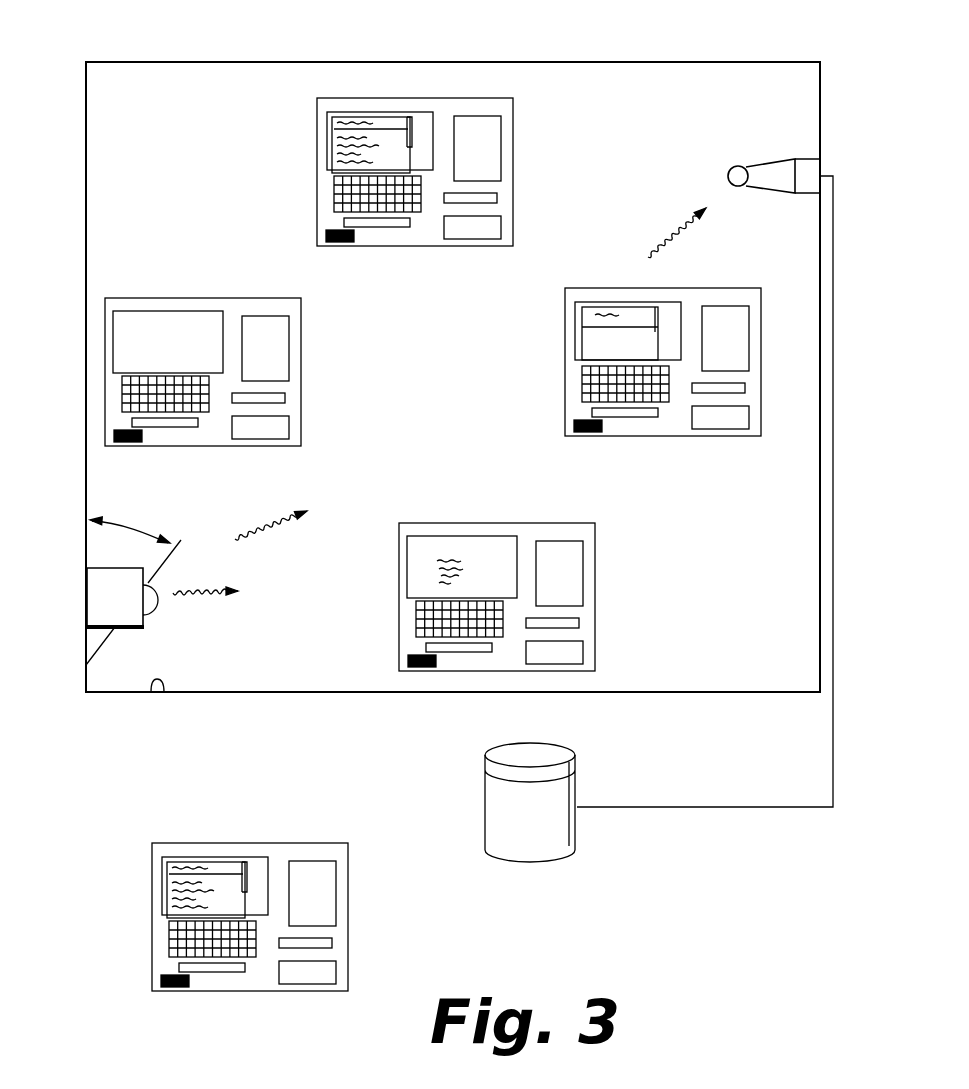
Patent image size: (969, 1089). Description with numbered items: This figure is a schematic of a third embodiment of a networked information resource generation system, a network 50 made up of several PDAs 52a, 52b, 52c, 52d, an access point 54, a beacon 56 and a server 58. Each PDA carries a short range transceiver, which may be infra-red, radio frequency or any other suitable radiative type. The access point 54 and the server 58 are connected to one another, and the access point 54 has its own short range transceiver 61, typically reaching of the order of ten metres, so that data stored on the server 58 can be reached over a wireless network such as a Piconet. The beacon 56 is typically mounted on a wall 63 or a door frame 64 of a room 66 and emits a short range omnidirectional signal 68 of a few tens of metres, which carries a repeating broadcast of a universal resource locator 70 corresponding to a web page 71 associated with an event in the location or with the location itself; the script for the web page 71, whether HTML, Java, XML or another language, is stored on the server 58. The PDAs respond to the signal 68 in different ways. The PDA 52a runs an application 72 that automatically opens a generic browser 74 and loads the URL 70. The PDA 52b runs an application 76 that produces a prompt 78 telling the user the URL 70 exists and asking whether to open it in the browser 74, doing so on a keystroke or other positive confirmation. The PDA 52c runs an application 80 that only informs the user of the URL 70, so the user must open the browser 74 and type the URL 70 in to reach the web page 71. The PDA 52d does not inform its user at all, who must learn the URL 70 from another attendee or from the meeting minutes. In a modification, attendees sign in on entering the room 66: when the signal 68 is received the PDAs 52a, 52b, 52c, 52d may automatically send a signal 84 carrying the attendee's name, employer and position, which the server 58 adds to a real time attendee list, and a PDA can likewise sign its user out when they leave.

The network 50 is at (318, 282).
The PDA 52a is at (385, 165).
The PDA 52b is at (620, 355).
The PDA 52c is at (496, 630).
The PDA 52d is at (242, 372).
The access point 54 is at (767, 110).
The beacon 56 is at (103, 590).
The server 58 is at (542, 838).
The transceiver 61 is at (735, 165).
The wall 63 is at (158, 708).
The door frame 64 is at (170, 552).
The room 66 is at (289, 650).
The omnidirectional signal 68 is at (241, 535).
The universal resource locator (URL) 70 is at (328, 113).
The web page 71 is at (398, 118).
The application 72 is at (323, 235).
The generic browser 74 is at (383, 118).
The application 76 is at (605, 425).
The prompt 78 is at (598, 302).
The application 80 is at (417, 668).
The signal 84 is at (674, 230).